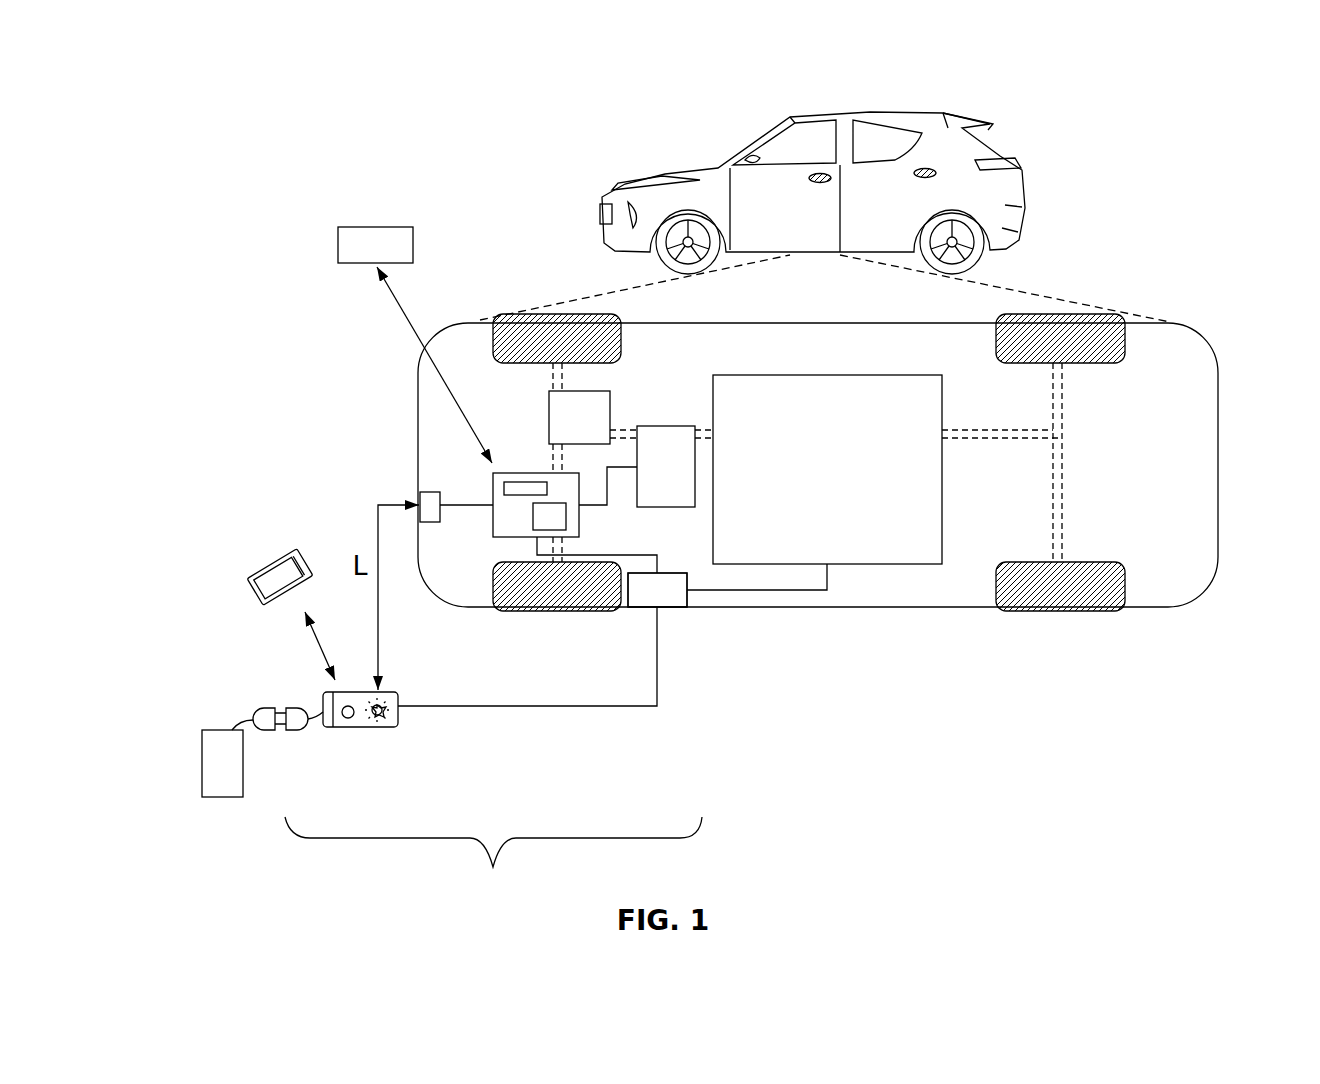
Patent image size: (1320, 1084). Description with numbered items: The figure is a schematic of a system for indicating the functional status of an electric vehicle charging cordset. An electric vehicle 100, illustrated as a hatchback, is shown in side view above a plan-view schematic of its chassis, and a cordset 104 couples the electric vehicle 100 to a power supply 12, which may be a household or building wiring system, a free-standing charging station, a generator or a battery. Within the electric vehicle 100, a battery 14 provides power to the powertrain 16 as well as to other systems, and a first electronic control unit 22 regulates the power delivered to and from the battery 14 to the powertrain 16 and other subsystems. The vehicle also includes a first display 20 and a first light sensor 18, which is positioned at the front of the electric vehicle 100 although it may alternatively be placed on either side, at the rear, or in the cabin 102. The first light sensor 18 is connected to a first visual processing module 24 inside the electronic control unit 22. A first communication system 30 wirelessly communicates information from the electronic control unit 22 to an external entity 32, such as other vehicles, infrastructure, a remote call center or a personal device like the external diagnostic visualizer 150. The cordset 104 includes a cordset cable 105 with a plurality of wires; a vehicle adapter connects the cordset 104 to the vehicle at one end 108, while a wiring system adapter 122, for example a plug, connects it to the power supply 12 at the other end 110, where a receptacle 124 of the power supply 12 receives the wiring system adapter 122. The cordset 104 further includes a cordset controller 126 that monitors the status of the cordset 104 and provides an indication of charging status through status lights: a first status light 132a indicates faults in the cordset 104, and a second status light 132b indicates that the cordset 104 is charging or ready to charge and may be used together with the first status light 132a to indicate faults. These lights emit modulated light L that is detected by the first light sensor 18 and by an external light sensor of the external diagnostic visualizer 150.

The electric vehicle 100 is at (1019, 93).
The cabin 102 is at (820, 138).
The battery 14 is at (813, 482).
The powertrain 16 is at (567, 431).
The first display 20 is at (666, 426).
The first electronic control unit 22 is at (493, 530).
The first visual processing module 24 is at (566, 517).
The first communication system 30 is at (537, 482).
The first light sensor 18 is at (420, 500).
The external entity 32 is at (362, 259).
The end 108 is at (655, 608).
The cordset cable 105 is at (565, 707).
The cordset 104 is at (493, 858).
The other end 110 is at (292, 726).
The wiring system adapter 122 is at (295, 733).
The receptacle 124 is at (257, 712).
The cordset controller 126 is at (368, 730).
The first status light 132a is at (383, 713).
The second status light 132b is at (352, 707).
The external diagnostic visualizer 150 is at (266, 563).
The power supply 12 is at (222, 800).